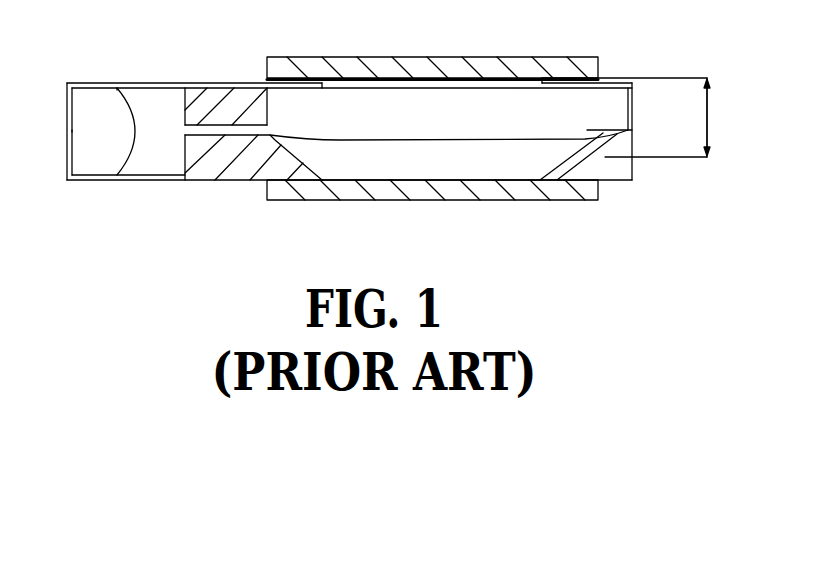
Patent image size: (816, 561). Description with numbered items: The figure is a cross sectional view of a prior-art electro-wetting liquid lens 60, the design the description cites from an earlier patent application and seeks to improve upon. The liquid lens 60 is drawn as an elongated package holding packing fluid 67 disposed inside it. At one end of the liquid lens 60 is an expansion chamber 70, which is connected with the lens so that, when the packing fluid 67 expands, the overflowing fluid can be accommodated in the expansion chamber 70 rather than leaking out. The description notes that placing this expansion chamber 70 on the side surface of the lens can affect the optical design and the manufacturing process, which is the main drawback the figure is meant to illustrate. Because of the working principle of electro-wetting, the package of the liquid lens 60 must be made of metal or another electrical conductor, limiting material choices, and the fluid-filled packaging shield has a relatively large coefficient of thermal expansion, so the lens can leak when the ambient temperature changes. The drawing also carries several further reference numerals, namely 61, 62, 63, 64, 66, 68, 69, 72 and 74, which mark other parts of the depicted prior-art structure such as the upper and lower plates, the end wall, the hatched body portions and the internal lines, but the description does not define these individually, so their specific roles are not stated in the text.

The electro-wetting liquid lens 60 is at (668, 57).
The adhesive film layer 61 is at (428, 72).
The upper substrate plate 62 is at (493, 56).
The bonding portion 63 is at (568, 70).
The lower substrate plate 64 is at (533, 190).
The end window 66 is at (630, 112).
The packing fluid 67 is at (155, 98).
The inclined support member 68 is at (557, 148).
The flexible membrane 69 is at (435, 140).
The expansion chamber 70 is at (118, 180).
The lens compartment 72 is at (88, 97).
The lower housing block 74 is at (232, 136).